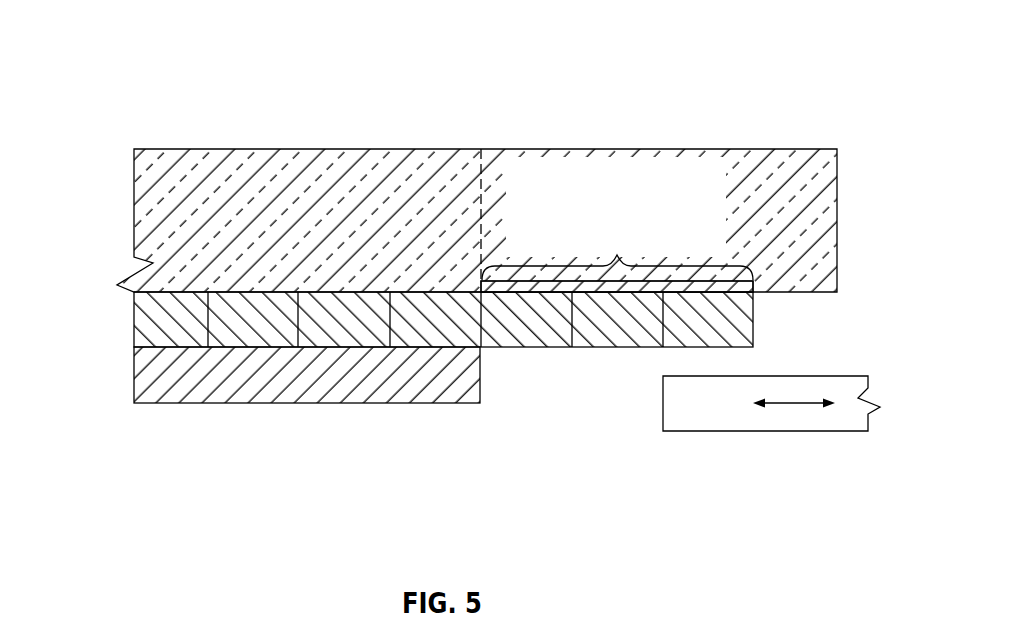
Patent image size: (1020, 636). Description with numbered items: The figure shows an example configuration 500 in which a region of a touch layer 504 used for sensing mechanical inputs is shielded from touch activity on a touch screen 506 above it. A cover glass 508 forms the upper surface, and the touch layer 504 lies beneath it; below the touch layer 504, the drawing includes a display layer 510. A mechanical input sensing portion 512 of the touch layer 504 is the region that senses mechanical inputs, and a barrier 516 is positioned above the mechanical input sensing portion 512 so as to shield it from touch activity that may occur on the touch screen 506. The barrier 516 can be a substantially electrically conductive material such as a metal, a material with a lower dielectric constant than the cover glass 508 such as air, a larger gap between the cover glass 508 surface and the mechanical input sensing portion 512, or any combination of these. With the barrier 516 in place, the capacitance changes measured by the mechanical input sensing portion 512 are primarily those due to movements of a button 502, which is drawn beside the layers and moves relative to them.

The configuration 500 is at (771, 46).
The button 502 is at (772, 431).
The touch layer 504 is at (134, 321).
The touch screen 506 is at (480, 105).
The cover glass 508 is at (467, 162).
The display layer 510 is at (134, 373).
The mechanical input sensing portion 512 is at (617, 220).
The barrier 516 is at (747, 285).